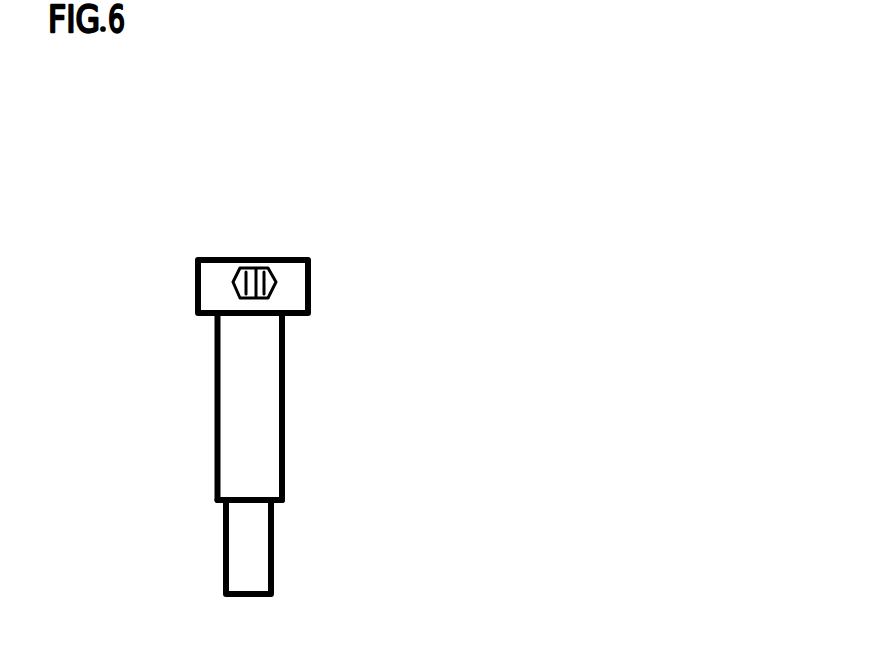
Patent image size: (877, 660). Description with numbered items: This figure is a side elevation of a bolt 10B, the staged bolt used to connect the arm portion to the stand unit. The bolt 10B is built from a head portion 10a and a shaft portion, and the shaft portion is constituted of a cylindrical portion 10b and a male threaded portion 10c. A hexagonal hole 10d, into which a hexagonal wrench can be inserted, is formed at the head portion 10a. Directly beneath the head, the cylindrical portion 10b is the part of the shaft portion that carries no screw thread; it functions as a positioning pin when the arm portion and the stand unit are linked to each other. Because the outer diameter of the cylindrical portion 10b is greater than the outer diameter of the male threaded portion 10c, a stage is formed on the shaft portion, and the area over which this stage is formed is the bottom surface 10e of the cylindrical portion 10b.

The bolt 10B is at (636, 224).
The head portion 10a is at (311, 283).
The cylindrical portion 10b is at (283, 418).
The male threaded portion 10c is at (273, 553).
The hexagonal hole 10d is at (258, 258).
The bottom surface 10e is at (210, 513).